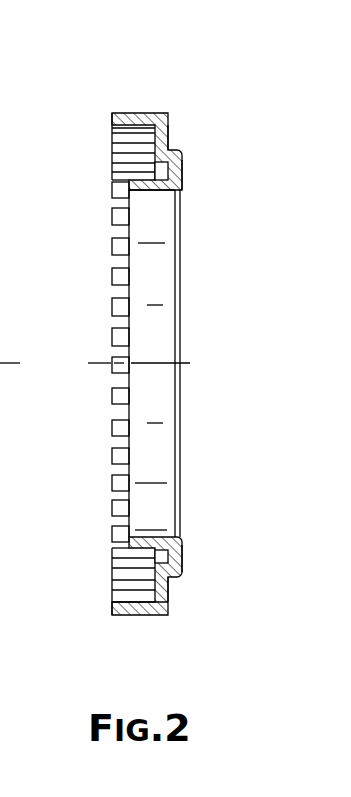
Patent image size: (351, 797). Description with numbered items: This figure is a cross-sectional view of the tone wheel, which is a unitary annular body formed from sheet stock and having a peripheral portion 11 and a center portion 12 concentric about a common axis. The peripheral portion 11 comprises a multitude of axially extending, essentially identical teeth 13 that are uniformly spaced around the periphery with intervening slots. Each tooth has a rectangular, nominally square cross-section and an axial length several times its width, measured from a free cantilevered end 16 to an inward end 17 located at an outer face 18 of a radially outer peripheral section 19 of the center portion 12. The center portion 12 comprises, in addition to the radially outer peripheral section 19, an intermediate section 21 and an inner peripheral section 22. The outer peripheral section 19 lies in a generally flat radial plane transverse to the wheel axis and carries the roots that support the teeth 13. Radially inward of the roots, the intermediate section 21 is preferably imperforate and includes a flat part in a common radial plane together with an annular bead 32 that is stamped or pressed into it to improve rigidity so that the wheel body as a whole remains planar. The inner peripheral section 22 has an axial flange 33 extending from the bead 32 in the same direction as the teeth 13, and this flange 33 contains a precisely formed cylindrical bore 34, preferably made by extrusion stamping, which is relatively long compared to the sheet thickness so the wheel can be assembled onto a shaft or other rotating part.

The peripheral portion 11 is at (147, 112).
The center portion 12 is at (170, 131).
The teeth 13 is at (118, 490).
The free cantilevered end 16 is at (112, 121).
The inward end 17 is at (231, 634).
The outer face 18 is at (173, 598).
The radially outer peripheral section 19 is at (170, 583).
The intermediate section 21 is at (183, 556).
The inner peripheral section 22 is at (154, 535).
The annular bead 32 is at (222, 173).
The axial flange 33 is at (157, 194).
The cylindrical bore 34 is at (141, 195).